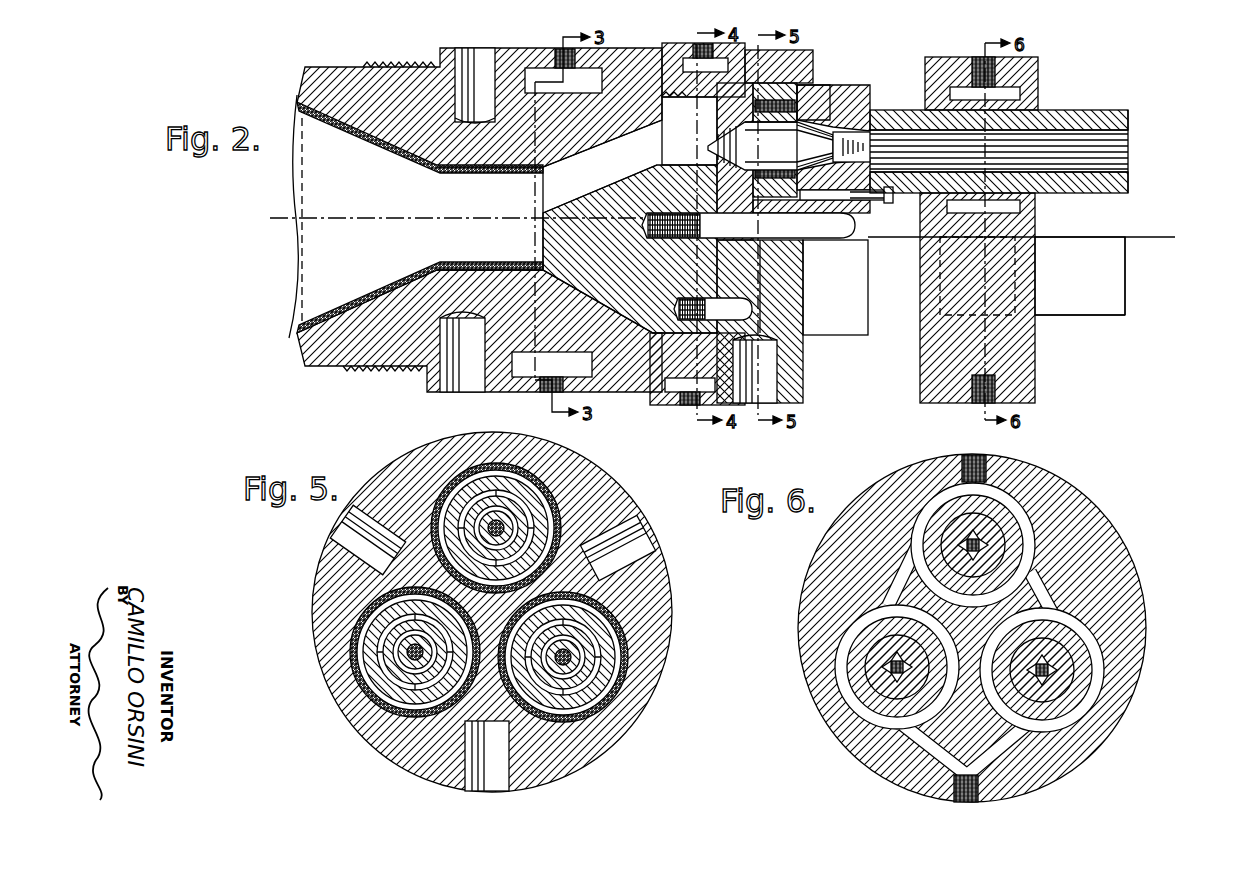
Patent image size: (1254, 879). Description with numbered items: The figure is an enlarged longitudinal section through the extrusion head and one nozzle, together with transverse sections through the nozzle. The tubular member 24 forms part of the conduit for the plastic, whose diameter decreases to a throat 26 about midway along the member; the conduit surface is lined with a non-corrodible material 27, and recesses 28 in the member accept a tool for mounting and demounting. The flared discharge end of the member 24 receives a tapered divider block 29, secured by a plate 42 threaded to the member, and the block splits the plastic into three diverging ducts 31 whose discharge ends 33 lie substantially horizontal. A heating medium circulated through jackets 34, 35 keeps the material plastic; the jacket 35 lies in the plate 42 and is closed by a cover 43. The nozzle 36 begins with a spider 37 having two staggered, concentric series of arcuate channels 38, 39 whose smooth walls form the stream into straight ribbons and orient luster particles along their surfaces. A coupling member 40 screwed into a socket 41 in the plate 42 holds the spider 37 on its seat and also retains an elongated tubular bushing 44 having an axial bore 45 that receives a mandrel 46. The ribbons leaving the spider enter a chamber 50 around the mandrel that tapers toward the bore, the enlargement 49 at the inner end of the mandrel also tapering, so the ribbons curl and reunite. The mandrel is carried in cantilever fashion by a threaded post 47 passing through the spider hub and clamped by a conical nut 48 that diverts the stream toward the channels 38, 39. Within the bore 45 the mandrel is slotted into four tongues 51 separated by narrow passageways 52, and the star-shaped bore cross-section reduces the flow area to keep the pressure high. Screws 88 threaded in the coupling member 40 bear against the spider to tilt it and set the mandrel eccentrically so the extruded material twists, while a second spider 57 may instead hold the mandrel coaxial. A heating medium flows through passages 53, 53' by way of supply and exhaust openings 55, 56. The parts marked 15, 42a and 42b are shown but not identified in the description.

In FIG. 2, the spray nozzle assembly 15 is at (399, 49).
In FIG. 2, the tubular member 24 is at (353, 364).
In FIG. 2, the throat 26 is at (490, 218).
In FIG. 2, the non-corrodible material 27 is at (410, 152).
In FIG. 2, the recesses 28 is at (450, 388).
In FIG. 2, the tapered divider block 29 is at (542, 236).
In FIG. 2, the diverging ducts 31 is at (602, 166).
In FIG. 2, the discharge ends 33 is at (689, 128).
In FIG. 2, the heating jacket 34 is at (540, 382).
In FIG. 2, the heating jacket 35 is at (686, 394).
In FIG. 2, the nozzle 36 is at (1058, 114).
In FIG. 2, the spider 37 is at (797, 90).
In FIG. 2, the arcuate channels 38 is at (796, 108).
In FIG. 5, the arcuate channels 38 is at (467, 500).
In FIG. 2, the arcuate channels 39 is at (797, 170).
In FIG. 5, the arcuate channels 39 is at (522, 520).
In FIG. 2, the coupling member 40 is at (873, 84).
In FIG. 2, the socket 41 is at (830, 88).
In FIG. 2, the plate 42 is at (813, 62).
In FIG. 2, the bolt 42a is at (834, 240).
In FIG. 2, the bolt 42b is at (750, 310).
In FIG. 2, the cover 43 is at (656, 395).
In FIG. 2, the tubular bushing 44 is at (1128, 119).
In FIG. 2, the axial bore 45 is at (1128, 137).
In FIG. 2, the mandrel 46 is at (882, 128).
In FIG. 2, the threaded post 47 is at (770, 146).
In FIG. 2, the nut 48 is at (748, 122).
In FIG. 2, the enlargement 49 is at (815, 146).
In FIG. 2, the chamber 50 is at (849, 139).
In FIG. 2, the tongues 51 is at (1128, 161).
In FIG. 2, the passageways 52 is at (1128, 149).
In FIG. 2, the heating passages 53 is at (995, 233).
In FIG. 6, the heating passages 53 is at (995, 628).
In FIG. 6, the heating passages 53' is at (969, 611).
In FIG. 6, the supply opening 55 is at (980, 797).
In FIG. 6, the exhaust opening 56 is at (972, 454).
In FIG. 2, the second spider 57 is at (833, 175).
In FIG. 2, the screws 88 is at (888, 203).